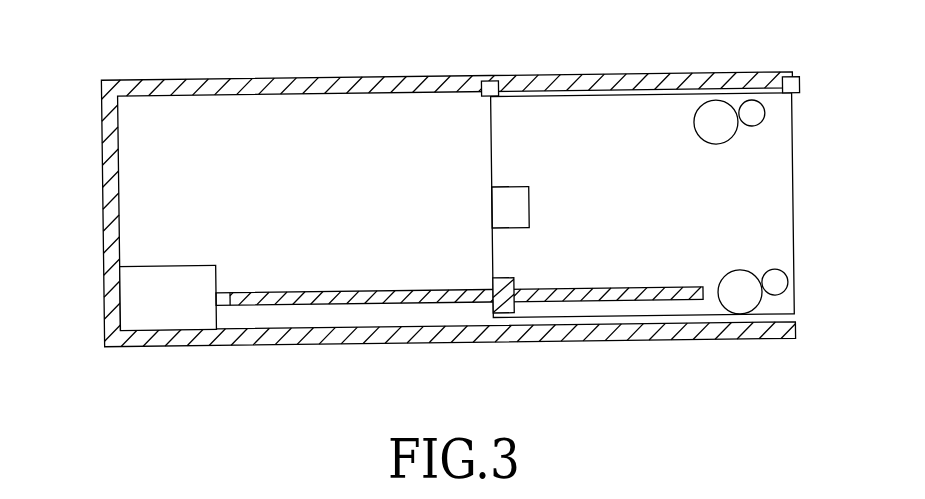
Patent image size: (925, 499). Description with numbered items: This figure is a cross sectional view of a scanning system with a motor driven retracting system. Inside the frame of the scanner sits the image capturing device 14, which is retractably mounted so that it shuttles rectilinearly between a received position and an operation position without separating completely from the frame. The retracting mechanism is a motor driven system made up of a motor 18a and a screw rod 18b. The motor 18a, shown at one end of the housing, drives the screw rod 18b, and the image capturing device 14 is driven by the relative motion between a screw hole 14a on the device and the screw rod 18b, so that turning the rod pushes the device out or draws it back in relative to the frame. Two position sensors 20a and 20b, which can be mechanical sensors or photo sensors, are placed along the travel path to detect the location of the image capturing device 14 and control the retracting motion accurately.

The image capturing device 14 is at (794, 184).
The screw hole 14a is at (494, 320).
The motor 18a is at (145, 296).
The screw rod 18b is at (292, 303).
The position sensor 20a is at (490, 82).
The position sensor 20b is at (802, 85).